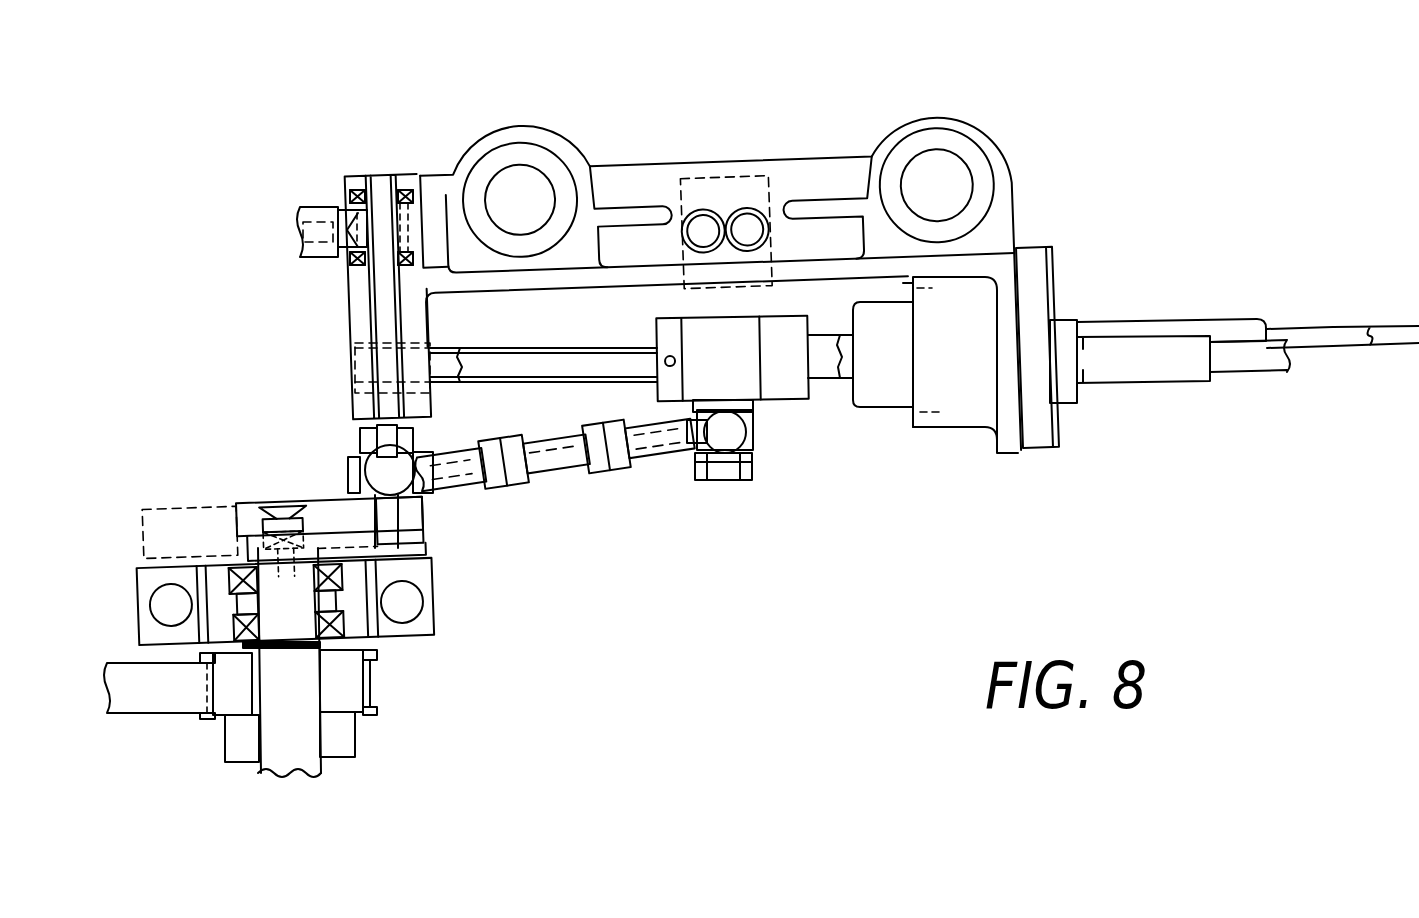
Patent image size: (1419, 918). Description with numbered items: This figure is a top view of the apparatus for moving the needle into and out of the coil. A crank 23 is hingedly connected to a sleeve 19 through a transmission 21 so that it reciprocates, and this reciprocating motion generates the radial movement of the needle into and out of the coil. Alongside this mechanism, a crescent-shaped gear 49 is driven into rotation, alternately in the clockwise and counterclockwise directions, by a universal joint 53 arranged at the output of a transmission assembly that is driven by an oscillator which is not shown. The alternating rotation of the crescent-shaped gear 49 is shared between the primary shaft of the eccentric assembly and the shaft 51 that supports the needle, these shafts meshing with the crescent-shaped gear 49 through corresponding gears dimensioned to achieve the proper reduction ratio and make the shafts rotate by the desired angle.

The sleeve 19 is at (783, 378).
The transmission 21 is at (568, 363).
The crank 23 is at (247, 520).
The crescent-shaped gear 49 is at (383, 303).
The shaft 51 is at (555, 450).
The universal joint 53 is at (313, 220).